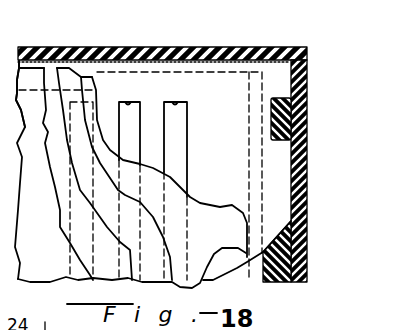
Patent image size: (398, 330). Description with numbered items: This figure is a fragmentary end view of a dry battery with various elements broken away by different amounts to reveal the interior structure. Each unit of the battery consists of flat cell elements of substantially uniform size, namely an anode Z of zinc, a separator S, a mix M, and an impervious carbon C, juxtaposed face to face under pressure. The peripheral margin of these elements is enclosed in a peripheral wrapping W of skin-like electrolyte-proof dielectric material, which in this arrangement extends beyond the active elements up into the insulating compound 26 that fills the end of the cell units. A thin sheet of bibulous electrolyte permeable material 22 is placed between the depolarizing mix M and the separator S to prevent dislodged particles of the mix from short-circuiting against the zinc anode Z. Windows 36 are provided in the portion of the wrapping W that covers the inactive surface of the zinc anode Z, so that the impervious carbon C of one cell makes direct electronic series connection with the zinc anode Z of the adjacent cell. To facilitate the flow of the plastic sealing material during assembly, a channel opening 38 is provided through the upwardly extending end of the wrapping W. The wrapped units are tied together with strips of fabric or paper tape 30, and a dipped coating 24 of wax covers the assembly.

The dipped coating 24 is at (62, 46).
The strips of fabric or paper tape 30 is at (309, 52).
The channel opening 38 is at (308, 100).
The insulating compound 26 is at (308, 221).
The windows 36 is at (176, 104).
The electrolyte permeable material 22 is at (126, 178).
The peripheral wrapping W is at (94, 72).
The separator S is at (326, 256).
The mix M is at (94, 174).
The carbon C is at (169, 167).
The zinc anode Z is at (131, 150).